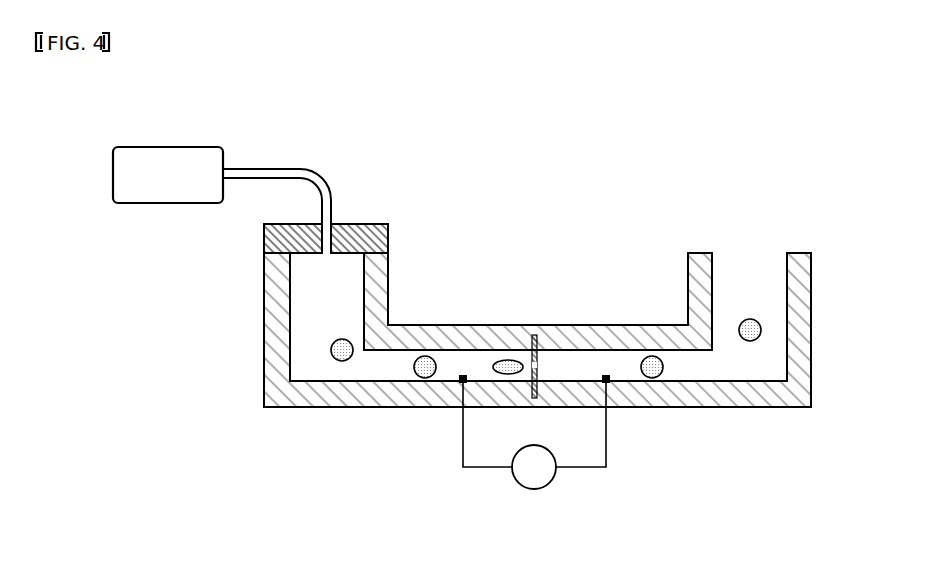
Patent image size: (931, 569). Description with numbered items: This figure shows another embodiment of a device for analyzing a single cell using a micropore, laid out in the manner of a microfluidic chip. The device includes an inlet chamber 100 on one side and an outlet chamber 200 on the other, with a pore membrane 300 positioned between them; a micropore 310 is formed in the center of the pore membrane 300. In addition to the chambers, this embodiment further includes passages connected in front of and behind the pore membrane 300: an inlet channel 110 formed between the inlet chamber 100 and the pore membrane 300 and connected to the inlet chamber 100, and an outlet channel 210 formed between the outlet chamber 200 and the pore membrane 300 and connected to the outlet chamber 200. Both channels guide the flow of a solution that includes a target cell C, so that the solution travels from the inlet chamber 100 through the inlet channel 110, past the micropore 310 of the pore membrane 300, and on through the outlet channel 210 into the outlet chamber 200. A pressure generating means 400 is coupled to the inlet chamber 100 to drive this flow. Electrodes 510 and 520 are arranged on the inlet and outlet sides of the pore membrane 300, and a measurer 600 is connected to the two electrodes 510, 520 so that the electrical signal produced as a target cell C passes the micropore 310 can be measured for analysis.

The inlet chamber 100 is at (322, 288).
The inlet channel 110 is at (385, 367).
The outlet chamber 200 is at (755, 285).
The outlet channel 210 is at (683, 367).
The pore membrane 300 is at (537, 335).
The micropore 310 is at (538, 367).
The pressure generating means 400 is at (167, 147).
The electrode 510 is at (463, 375).
The electrode 520 is at (606, 375).
The measurer 600 is at (528, 490).
The target cell C is at (425, 357).